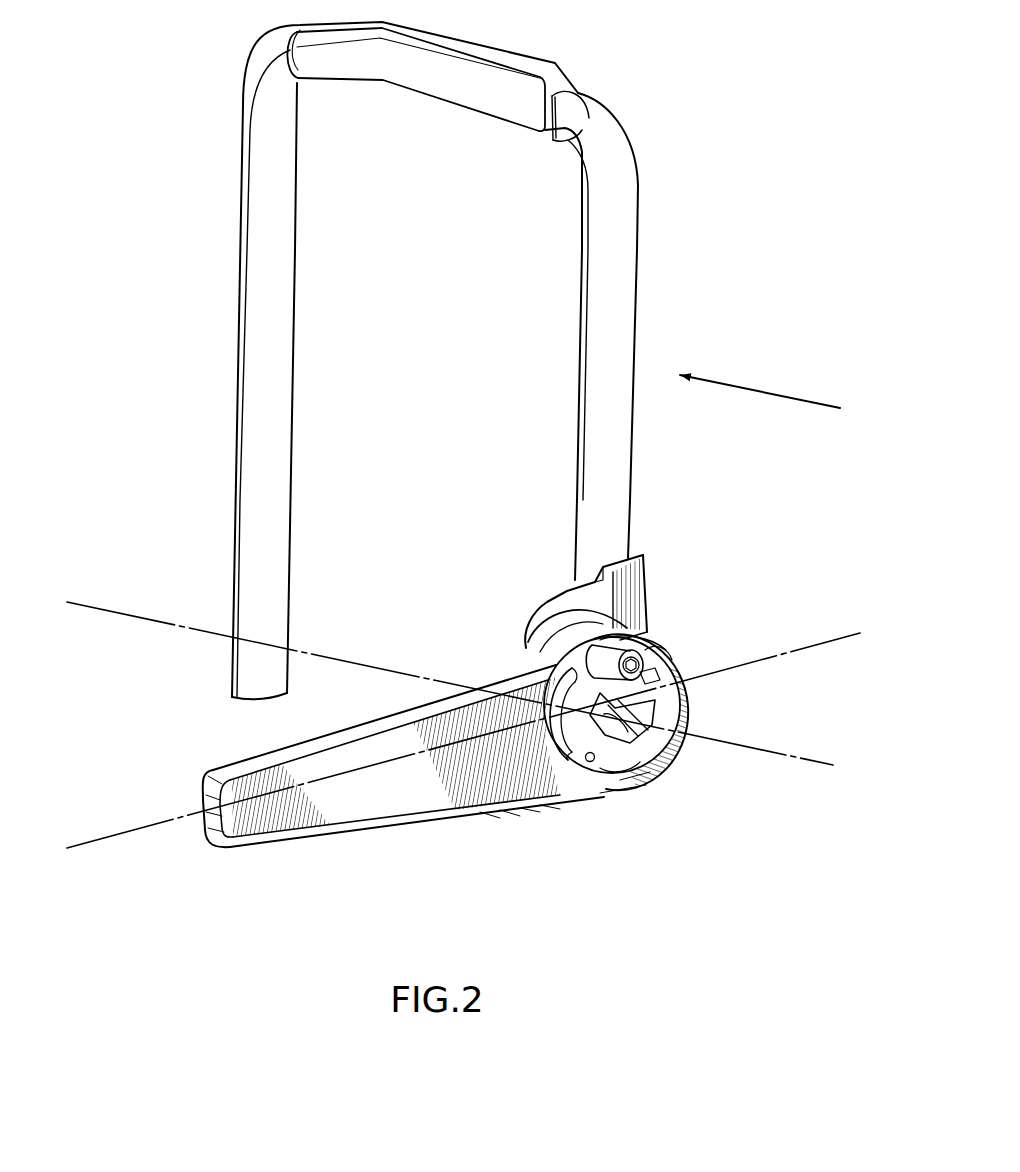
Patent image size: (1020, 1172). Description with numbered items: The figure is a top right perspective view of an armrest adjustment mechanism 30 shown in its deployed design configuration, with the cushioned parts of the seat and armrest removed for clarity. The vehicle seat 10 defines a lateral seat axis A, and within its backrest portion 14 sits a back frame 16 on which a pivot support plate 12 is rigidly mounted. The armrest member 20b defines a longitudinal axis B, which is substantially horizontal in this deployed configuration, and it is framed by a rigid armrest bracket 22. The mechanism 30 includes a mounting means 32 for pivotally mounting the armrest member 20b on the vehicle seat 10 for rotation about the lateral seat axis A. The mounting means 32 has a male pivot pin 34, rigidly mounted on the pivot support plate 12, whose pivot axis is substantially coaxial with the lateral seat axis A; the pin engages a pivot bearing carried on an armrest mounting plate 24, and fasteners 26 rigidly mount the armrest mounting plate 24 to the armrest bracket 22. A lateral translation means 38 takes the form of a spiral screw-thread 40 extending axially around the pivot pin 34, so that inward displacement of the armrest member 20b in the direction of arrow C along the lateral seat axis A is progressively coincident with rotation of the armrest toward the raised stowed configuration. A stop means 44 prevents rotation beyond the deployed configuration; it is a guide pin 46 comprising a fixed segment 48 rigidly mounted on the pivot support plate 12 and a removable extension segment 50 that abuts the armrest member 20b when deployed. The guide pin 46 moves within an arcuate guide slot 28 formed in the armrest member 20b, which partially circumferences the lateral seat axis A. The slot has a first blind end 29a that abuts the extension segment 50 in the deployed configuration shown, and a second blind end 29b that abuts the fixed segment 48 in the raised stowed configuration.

The vehicle seat 10 is at (656, 170).
The pivot support plate 12 is at (577, 618).
The backrest portion 14 is at (222, 284).
The back frame 16 is at (280, 132).
The armrest member 20b is at (368, 847).
The armrest bracket 22 is at (277, 807).
The armrest mounting plate 24 is at (500, 663).
The fasteners 26 is at (591, 763).
The arcuate guide slot 28 is at (560, 620).
The first blind end 29a is at (662, 672).
The second blind end 29b is at (572, 782).
The armrest adjustment mechanism 30 is at (684, 798).
The mounting means 32 is at (673, 747).
The male pivot pin 34 is at (662, 703).
The lateral translation means 38 is at (619, 754).
The spiral screw-thread 40 is at (665, 687).
The stop means 44 is at (645, 655).
The guide pin 46 is at (742, 514).
The fixed segment 48 is at (660, 648).
The extension segment 50 is at (650, 674).
The lateral seat axis A is at (103, 612).
The longitudinal axis B is at (117, 835).
The arrow C is at (842, 408).